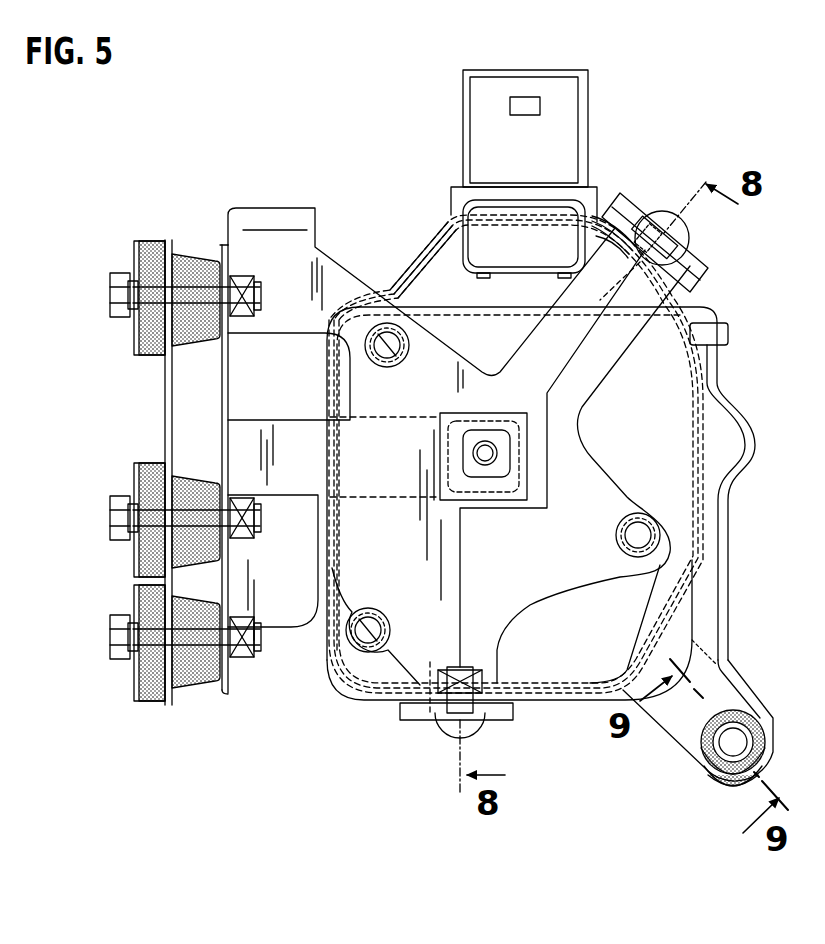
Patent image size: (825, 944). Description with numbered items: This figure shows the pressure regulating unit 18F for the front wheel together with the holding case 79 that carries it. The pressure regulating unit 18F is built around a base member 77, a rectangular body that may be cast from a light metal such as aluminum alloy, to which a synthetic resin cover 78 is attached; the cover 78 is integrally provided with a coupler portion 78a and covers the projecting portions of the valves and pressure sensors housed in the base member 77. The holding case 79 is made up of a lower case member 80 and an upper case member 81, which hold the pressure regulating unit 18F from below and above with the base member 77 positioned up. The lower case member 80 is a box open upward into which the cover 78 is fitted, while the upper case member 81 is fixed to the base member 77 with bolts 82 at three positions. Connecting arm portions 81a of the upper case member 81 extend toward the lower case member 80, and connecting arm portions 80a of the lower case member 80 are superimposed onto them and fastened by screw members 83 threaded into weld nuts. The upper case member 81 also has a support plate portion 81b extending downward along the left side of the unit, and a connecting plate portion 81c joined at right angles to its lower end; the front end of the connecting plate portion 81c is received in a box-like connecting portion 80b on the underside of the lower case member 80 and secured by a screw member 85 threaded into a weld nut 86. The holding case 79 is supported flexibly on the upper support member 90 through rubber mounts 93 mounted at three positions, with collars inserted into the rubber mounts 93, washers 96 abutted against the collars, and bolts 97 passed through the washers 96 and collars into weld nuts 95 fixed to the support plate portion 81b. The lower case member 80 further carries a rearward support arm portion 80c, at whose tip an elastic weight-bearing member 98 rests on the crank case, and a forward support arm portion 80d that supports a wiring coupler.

The pressure regulating unit for the front wheel 18F is at (724, 552).
The base member 77 is at (705, 612).
The cover 78 is at (440, 278).
The coupler portion 78a is at (598, 198).
The holding case 79 is at (620, 460).
The lower case member 80 is at (720, 500).
The connecting arm portion 80a is at (709, 271).
The connecting portion 80b is at (473, 413).
The support arm portion 80c is at (745, 692).
The support arm portion 80d is at (575, 120).
The upper case member 81 is at (567, 413).
The connecting arm portion 81a is at (690, 252).
The support plate portion 81b is at (232, 382).
The connecting plate portion 81c is at (343, 495).
The bolt 82 is at (393, 358).
The screw member 83 is at (668, 214).
The screw member 85 is at (490, 440).
The weld nut 86 is at (498, 505).
The upper support member 90 is at (165, 388).
The rubber mount 93 is at (207, 262).
The weld nut 95 is at (246, 278).
The washer 96 is at (135, 262).
The bolt 97 is at (115, 298).
The elastic weight-bearing member 98 is at (732, 792).